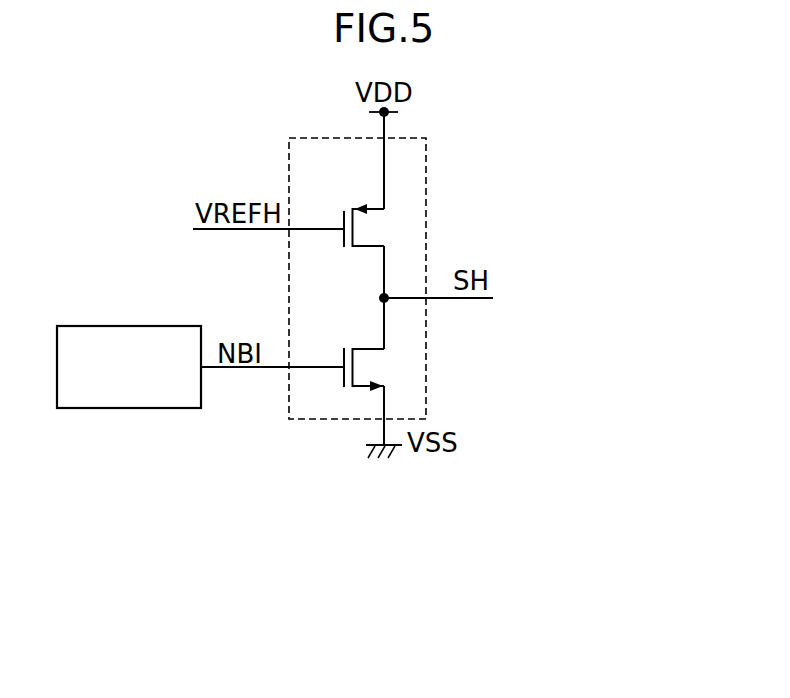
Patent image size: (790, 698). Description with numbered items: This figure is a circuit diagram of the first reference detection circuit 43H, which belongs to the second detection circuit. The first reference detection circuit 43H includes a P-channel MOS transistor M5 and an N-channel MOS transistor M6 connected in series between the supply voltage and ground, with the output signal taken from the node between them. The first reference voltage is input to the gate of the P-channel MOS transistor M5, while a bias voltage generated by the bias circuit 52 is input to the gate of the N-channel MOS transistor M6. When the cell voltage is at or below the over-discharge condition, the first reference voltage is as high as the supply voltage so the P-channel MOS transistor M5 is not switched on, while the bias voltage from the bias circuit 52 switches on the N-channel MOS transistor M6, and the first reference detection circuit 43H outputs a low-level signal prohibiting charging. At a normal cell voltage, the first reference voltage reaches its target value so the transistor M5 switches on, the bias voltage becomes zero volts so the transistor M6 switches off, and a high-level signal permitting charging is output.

The first reference detection circuit 43H is at (426, 180).
The P-channel MOS transistor M5 is at (343, 213).
The N-channel MOS transistor M6 is at (343, 351).
The bias circuit 52 is at (122, 325).